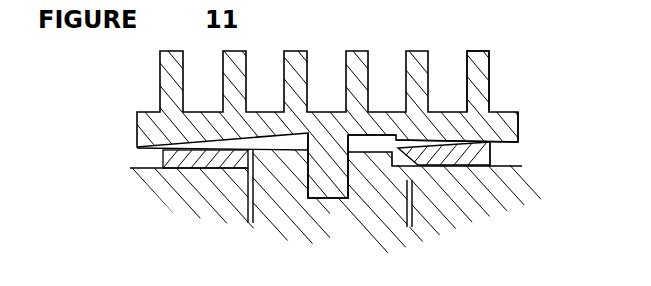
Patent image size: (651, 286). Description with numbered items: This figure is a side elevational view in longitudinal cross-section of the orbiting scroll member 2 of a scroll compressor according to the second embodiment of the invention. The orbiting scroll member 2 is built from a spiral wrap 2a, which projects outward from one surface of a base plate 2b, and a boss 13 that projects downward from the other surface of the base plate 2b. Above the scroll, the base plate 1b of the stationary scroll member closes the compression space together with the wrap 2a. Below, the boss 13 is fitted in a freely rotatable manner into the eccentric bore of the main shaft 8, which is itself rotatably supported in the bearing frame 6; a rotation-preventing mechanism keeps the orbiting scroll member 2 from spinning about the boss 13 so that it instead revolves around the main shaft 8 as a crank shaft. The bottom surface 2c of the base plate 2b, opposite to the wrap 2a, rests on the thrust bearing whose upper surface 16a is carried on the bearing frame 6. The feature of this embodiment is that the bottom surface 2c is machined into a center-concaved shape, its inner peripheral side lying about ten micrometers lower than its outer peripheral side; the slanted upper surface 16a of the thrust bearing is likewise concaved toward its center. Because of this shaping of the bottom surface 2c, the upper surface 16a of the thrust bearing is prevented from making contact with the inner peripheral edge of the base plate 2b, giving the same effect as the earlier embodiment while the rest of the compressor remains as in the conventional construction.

The orbiting scroll member 2 is at (160, 85).
The wrap 2a is at (480, 75).
The base plate 2b is at (503, 125).
The bottom surface 2c is at (437, 162).
The upper surface of thrust bearing 16a is at (440, 130).
The boss 13 is at (341, 191).
The main shaft 8 is at (298, 214).
The bearing frame 6 is at (485, 200).
The base plate 1b is at (497, 153).